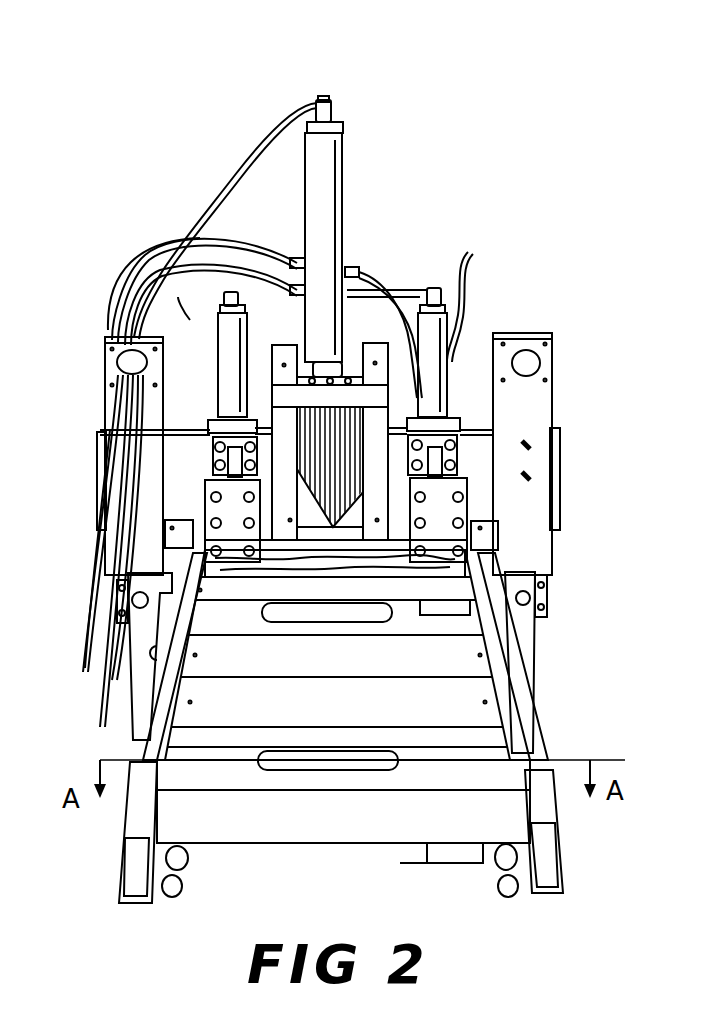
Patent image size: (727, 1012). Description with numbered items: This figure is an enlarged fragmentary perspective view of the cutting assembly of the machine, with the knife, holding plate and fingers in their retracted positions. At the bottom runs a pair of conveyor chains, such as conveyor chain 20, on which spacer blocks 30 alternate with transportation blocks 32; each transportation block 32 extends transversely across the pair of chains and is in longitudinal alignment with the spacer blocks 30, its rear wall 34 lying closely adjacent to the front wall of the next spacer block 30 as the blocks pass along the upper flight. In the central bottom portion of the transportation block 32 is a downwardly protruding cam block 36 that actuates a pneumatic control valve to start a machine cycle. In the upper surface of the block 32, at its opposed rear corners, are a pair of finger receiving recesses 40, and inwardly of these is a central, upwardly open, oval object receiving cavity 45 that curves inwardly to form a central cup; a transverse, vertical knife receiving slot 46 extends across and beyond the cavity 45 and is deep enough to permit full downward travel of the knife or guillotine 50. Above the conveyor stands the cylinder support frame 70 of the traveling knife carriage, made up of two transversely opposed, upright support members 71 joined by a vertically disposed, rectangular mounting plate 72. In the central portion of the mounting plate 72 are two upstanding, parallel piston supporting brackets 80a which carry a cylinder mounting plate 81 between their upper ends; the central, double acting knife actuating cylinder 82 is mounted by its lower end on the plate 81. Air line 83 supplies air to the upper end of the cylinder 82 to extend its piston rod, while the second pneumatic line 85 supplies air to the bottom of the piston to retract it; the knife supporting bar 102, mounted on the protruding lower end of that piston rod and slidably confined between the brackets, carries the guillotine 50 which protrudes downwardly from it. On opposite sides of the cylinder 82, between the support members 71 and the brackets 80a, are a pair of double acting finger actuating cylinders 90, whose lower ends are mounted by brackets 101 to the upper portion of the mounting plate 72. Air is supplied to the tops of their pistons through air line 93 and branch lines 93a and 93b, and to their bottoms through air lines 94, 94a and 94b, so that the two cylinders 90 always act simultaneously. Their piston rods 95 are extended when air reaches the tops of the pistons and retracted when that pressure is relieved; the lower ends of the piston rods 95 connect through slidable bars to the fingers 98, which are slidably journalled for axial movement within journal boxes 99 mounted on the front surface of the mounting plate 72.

The conveyor chain 20 is at (502, 875).
The spacer block 30 is at (333, 674).
The transportation block 32 is at (405, 625).
The rear wall 34 is at (510, 807).
The cam block 36 is at (428, 852).
The finger receiving recesses 40 is at (235, 615).
The object receiving cavity 45 is at (285, 622).
The knife receiving slot 46 is at (417, 758).
The knife or guillotine 50 is at (383, 393).
The cylinder support frame 70 is at (88, 352).
The support members 71 is at (108, 400).
The mounting plate 72 is at (553, 478).
The piston supporting brackets 80a is at (272, 305).
The cylinder mounting plate 81 is at (367, 336).
The knife actuating cylinder 82 is at (345, 180).
The air line 83 is at (258, 122).
The second pneumatic line 85 is at (180, 302).
The finger actuating cylinders 90 is at (223, 378).
The air line 93 is at (165, 245).
The air line 93a is at (282, 262).
The air line 93b is at (486, 293).
The air line 94 is at (118, 270).
The air line 94a is at (196, 215).
The air line 94b is at (350, 345).
The piston rods 95 is at (226, 462).
The fingers 98 is at (210, 482).
The journal boxes 99 is at (165, 518).
The brackets 101 is at (212, 426).
The knife supporting bar 102 is at (352, 407).